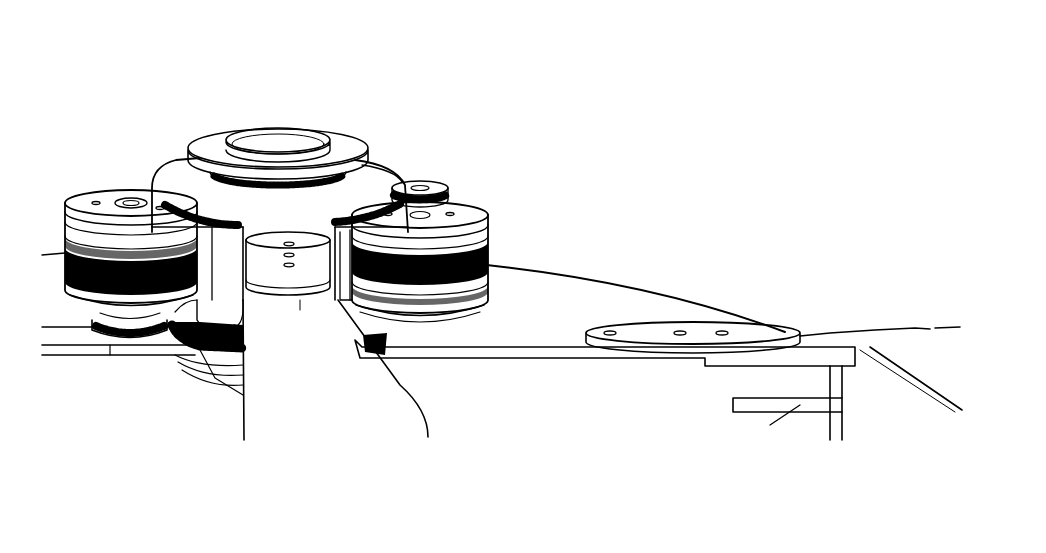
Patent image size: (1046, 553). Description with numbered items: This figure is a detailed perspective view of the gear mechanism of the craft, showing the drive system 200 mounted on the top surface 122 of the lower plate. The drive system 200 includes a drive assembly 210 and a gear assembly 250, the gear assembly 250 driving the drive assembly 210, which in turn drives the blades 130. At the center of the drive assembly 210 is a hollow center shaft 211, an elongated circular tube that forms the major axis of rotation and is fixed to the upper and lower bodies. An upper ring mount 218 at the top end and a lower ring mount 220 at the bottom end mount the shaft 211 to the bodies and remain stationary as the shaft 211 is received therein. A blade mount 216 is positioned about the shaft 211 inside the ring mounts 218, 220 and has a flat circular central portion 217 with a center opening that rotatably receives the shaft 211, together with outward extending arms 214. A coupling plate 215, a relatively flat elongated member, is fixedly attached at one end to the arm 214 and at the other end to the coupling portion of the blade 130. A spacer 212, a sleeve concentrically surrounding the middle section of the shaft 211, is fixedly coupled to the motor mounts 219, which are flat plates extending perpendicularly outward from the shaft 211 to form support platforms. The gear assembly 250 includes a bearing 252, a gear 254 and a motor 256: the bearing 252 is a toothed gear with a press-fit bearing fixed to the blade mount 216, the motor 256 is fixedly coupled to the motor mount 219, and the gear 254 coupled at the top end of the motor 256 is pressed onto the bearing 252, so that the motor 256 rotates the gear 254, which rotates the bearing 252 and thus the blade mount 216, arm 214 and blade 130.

The drive system 200 is at (692, 82).
The drive assembly 210 is at (180, 125).
The hollow center shaft 211 is at (272, 128).
The spacer 212 is at (228, 300).
The arm 214 is at (515, 342).
The coupling plate 215 is at (772, 330).
The blade mount 216 is at (157, 156).
The central portion 217 is at (380, 178).
The upper ring mount 218 is at (337, 134).
The motor mount 219 is at (103, 185).
The lower ring mount 220 is at (218, 388).
The gear assembly 250 is at (487, 187).
The bearing 252 is at (213, 350).
The gear 254 is at (447, 188).
The motor 256 is at (490, 222).
The top surface 122 is at (628, 298).
The blade 130 is at (862, 332).